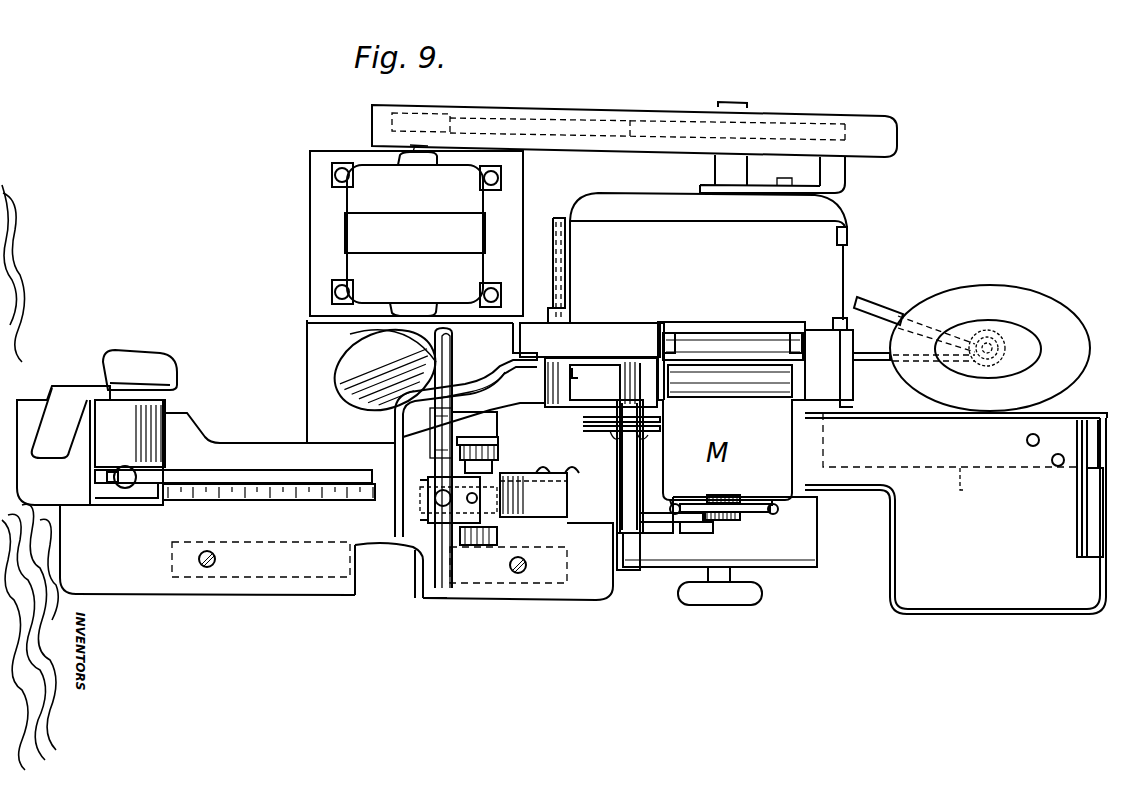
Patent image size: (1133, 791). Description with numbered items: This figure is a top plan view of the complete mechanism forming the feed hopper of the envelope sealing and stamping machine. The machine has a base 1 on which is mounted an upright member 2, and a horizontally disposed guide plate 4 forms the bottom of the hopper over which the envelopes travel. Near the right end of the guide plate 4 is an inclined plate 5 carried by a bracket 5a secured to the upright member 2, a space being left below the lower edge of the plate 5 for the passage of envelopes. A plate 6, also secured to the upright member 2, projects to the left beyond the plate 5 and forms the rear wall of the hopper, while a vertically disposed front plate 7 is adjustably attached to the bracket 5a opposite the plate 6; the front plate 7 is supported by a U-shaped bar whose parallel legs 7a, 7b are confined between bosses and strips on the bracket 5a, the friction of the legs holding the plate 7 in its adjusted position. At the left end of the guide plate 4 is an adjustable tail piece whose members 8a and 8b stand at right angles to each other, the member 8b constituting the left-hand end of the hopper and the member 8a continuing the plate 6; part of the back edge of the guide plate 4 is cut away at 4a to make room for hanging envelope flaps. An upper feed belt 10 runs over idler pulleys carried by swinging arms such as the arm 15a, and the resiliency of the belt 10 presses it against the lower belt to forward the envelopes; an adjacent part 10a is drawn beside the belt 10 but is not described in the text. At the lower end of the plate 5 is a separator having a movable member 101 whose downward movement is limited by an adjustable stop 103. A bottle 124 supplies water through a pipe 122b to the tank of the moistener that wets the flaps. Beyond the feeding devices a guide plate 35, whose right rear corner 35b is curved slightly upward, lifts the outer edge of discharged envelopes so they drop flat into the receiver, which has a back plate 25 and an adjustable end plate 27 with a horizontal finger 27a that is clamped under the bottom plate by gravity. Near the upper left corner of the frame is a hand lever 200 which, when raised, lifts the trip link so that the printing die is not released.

The base 1 is at (307, 402).
The upright member 2 is at (601, 323).
The guide plate 4 is at (600, 601).
The cut-away portion of feed plate 4a is at (262, 446).
The plate 5 is at (395, 434).
The bracket 5a is at (503, 362).
The plate 6 is at (342, 346).
The front plate 7 is at (366, 595).
The leg of U-shaped bar 7a is at (425, 600).
The leg of U-shaped bar 7b is at (450, 599).
The member of tail piece 8a is at (178, 372).
The member of tail piece 8b is at (167, 420).
The upper feed belt 10 is at (657, 525).
The support block extension 10a is at (693, 524).
The swinging arm 15a is at (600, 475).
The back plate 25 is at (1077, 414).
The adjustable end plate 27 is at (1077, 535).
The horizontal finger 27a is at (974, 485).
The guide plate 35 is at (813, 567).
The right rear corner of guide plate 35b is at (818, 499).
The movable member 101 is at (475, 492).
The adjustable stop 103 is at (428, 487).
The pipe 122b is at (879, 301).
The bottle 124 is at (1048, 297).
The lever 200 is at (575, 377).